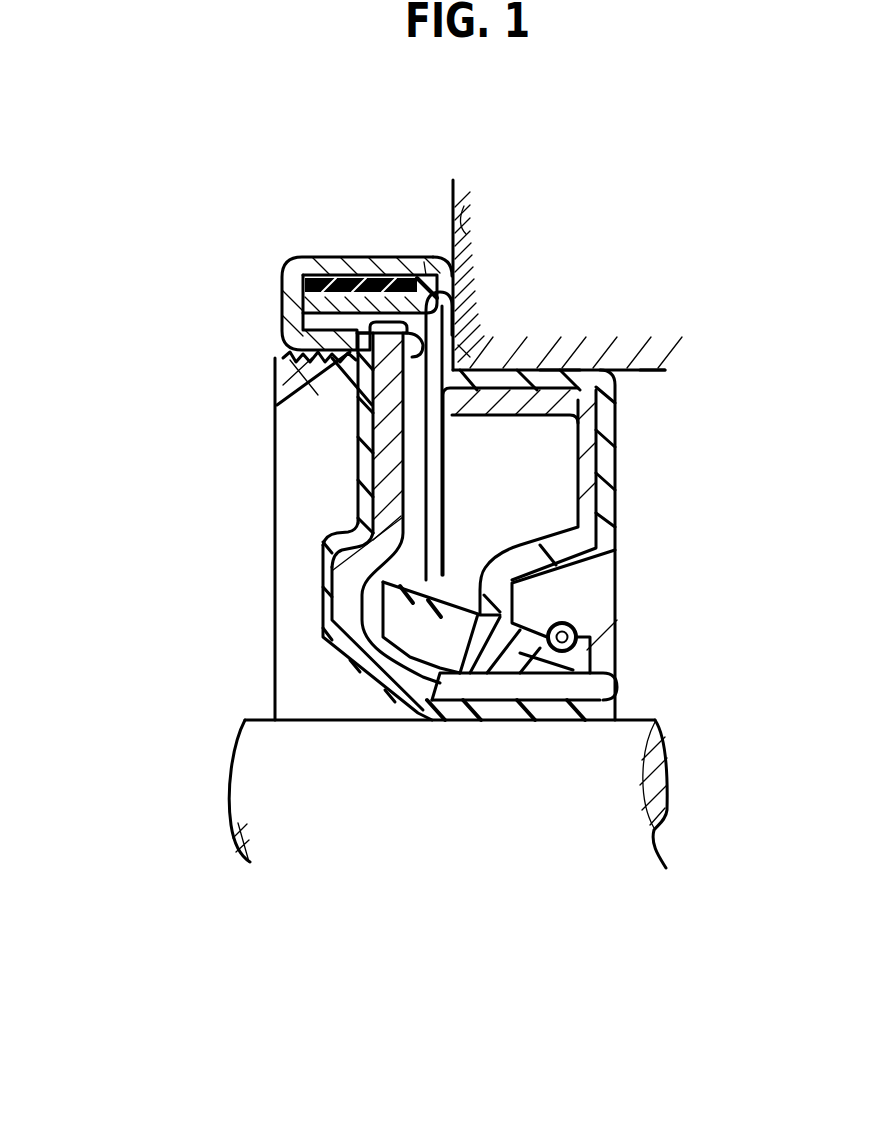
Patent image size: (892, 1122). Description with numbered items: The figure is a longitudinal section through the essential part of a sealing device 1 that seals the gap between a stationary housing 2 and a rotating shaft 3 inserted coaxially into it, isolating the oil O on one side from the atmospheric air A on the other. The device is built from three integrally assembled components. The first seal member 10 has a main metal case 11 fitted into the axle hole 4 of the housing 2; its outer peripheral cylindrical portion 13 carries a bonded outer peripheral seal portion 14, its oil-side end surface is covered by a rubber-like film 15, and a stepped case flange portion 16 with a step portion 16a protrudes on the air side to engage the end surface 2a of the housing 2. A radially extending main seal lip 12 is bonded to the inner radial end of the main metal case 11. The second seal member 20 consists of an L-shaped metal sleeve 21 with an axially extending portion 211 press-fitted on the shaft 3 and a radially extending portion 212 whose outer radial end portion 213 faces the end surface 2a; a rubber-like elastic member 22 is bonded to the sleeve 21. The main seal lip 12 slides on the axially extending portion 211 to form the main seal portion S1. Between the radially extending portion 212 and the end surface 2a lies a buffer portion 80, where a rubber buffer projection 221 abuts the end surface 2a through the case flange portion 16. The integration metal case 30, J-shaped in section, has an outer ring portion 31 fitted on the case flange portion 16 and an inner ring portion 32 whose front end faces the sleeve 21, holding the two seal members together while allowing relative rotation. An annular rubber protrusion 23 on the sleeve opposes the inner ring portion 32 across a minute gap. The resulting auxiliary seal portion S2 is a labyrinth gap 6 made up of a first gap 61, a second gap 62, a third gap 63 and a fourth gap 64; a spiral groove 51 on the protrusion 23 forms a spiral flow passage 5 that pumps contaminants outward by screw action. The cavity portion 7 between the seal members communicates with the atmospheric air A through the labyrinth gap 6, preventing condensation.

The sealing device 1 is at (178, 150).
The stationary housing 2 is at (450, 194).
The end surface 2a is at (466, 234).
The rotating shaft 3 is at (258, 729).
The axle hole 4 is at (650, 360).
The spiral flow passage 5 is at (287, 353).
The labyrinth gap 6 is at (354, 256).
The cavity portion 7 is at (500, 494).
The first seal member 10 is at (655, 413).
The main metal case 11 is at (598, 512).
The main seal lip 12 is at (588, 643).
The outer peripheral cylindrical portion 13 is at (672, 368).
The outer peripheral seal portion 14 is at (565, 368).
The film 15 is at (603, 464).
The case flange portion 16 is at (386, 320).
The step portion 16a is at (478, 367).
The second seal member 20 is at (300, 597).
The metal sleeve 21 is at (383, 668).
The rubber-like elastic member 22 is at (470, 718).
The annular rubber protrusion 23 is at (367, 393).
The integration metal case 30 is at (330, 258).
The outer ring portion 31 is at (425, 262).
The inner ring portion 32 is at (294, 332).
The spiral groove 51 is at (277, 376).
The first gap 61 is at (340, 390).
The second gap 62 is at (299, 296).
The third gap 63 is at (300, 272).
The fourth gap 64 is at (470, 345).
The buffer portion 80 is at (200, 487).
The axially extending portion 211 is at (528, 690).
The radially extending portion 212 is at (398, 445).
The outer radial end portion 213 is at (360, 432).
The buffer projection 221 is at (466, 368).
The main seal portion S1 is at (600, 668).
The auxiliary seal portion S2 is at (148, 299).
The atmospheric air A is at (110, 534).
The oil O is at (747, 569).